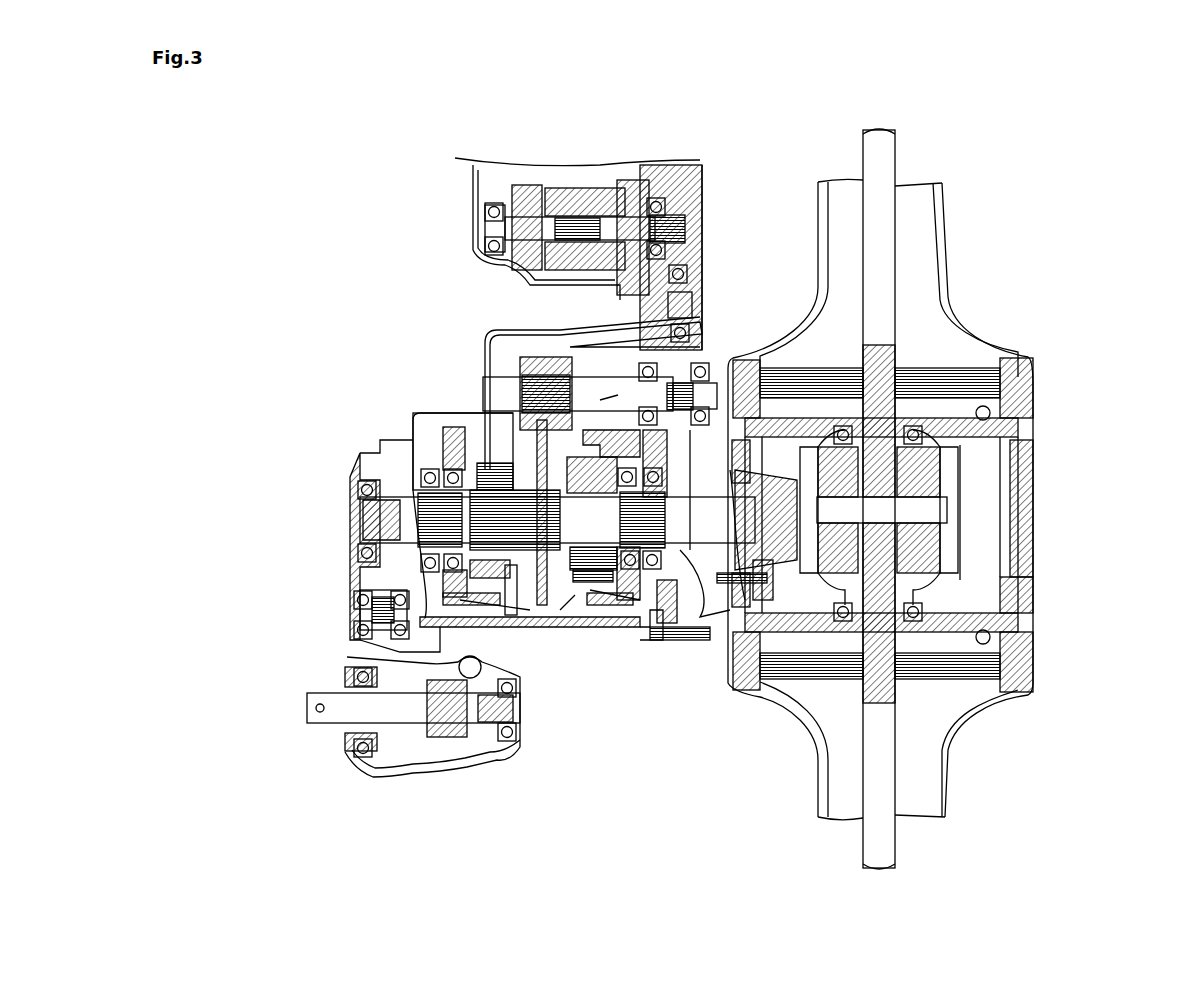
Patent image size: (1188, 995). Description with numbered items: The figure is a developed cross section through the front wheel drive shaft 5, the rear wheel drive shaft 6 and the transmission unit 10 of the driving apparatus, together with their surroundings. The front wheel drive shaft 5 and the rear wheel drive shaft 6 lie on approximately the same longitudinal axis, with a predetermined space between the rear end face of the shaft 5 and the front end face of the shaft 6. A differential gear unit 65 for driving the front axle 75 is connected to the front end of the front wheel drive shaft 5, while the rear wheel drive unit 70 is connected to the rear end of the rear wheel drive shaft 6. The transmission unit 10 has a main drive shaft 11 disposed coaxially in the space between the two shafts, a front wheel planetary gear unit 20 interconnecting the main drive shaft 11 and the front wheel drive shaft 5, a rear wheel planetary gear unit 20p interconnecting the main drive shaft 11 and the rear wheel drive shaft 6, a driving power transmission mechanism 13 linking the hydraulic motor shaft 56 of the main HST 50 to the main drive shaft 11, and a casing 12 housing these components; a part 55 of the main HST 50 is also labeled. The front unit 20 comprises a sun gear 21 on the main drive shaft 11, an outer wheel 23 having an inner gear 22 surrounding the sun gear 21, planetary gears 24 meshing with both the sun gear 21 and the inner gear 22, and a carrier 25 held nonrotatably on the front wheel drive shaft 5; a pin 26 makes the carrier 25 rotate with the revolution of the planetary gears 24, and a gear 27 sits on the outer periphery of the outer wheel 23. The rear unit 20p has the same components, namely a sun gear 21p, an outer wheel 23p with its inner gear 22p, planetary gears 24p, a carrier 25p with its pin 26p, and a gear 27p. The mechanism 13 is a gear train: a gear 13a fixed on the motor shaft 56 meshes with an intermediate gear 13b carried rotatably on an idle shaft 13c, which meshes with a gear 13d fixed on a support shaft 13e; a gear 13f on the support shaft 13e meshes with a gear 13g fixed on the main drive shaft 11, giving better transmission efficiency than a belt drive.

The front wheel drive shaft 5 is at (730, 652).
The rear wheel drive shaft 6 is at (400, 527).
The transmission unit 10 is at (313, 384).
The main drive shaft 11 is at (370, 554).
The casing 12 is at (490, 347).
The driving power transmission mechanism 13 is at (783, 194).
The gear 13a is at (675, 210).
The intermediate gear 13b is at (680, 274).
The idle shaft 13c is at (680, 306).
The gear 13d is at (675, 334).
The support shaft 13e is at (615, 397).
The gear 13f is at (540, 362).
The gear 13g is at (495, 390).
The front wheel planetary gear unit 20 is at (605, 667).
The rear wheel planetary gear unit 20p is at (420, 374).
The sun gear 21 is at (565, 582).
The sun gear 21p is at (520, 602).
The inner gear 22 is at (625, 602).
The clutch member (prime) 22p is at (512, 617).
The outer wheel 23 is at (645, 632).
The outer wheel 23p is at (445, 442).
The planetary gears 24 is at (582, 612).
The planetary gears 24p is at (460, 432).
The carrier 25 is at (722, 592).
The carrier 25p is at (360, 602).
The pin 26 is at (648, 612).
The spacer (prime) 26p is at (480, 427).
The gear 27 is at (683, 642).
The gear 27p is at (420, 432).
The main HST 50 is at (466, 197).
The motor 55 is at (555, 177).
The hydraulic motor shaft 56 is at (640, 197).
The differential gear unit 65 is at (965, 525).
The rear wheel drive unit 70 is at (335, 744).
The front axle 75 is at (880, 290).